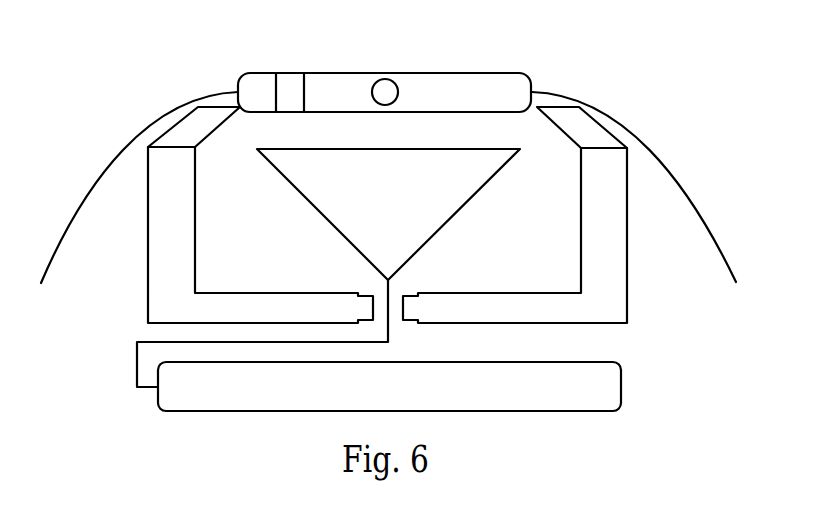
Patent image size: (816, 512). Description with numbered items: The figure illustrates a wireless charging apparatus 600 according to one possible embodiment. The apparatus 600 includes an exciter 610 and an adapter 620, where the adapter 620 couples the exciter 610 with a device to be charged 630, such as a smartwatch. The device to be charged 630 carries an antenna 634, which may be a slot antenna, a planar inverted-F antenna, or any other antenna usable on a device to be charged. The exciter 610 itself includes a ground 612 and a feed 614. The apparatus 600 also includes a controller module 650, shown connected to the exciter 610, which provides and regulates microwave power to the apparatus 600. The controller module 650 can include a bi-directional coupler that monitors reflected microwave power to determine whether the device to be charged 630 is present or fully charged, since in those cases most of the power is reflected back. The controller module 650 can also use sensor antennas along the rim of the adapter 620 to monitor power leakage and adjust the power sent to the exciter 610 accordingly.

The wireless charging apparatus 600 is at (678, 95).
The exciter 610 is at (355, 235).
The ground 612 is at (277, 292).
The feed 614 is at (413, 220).
The adapter 620 is at (172, 127).
The device to be charged 630 is at (532, 85).
The antenna 634 is at (293, 80).
The controller module 650 is at (621, 385).